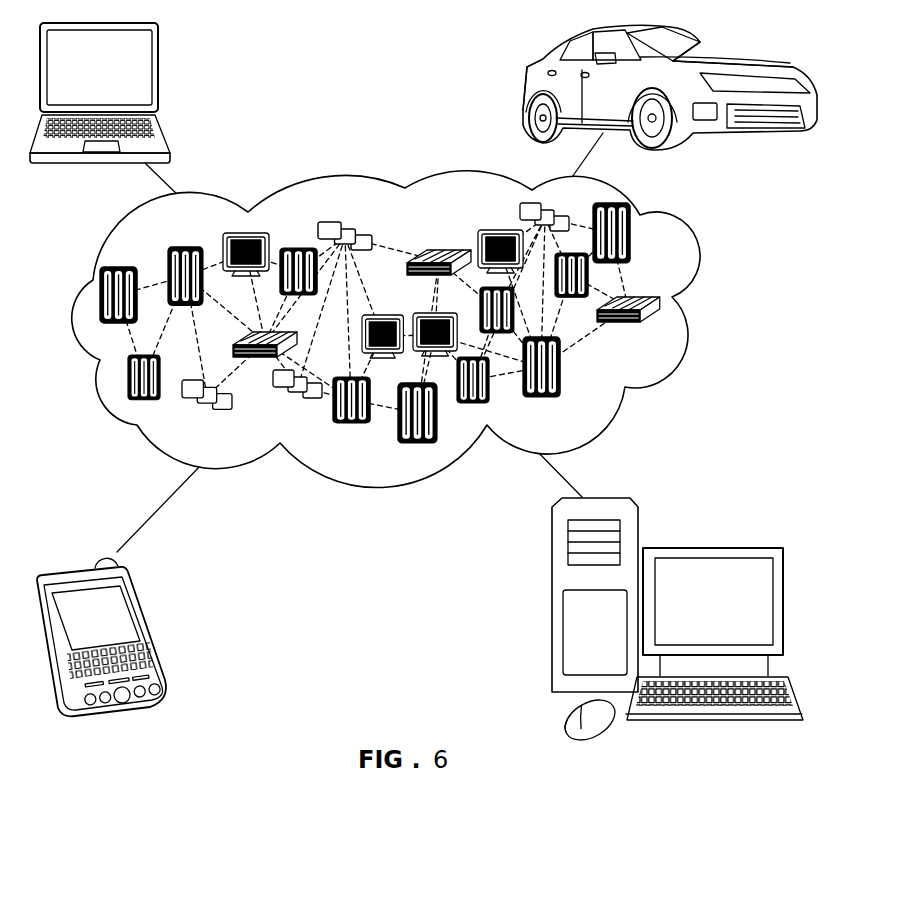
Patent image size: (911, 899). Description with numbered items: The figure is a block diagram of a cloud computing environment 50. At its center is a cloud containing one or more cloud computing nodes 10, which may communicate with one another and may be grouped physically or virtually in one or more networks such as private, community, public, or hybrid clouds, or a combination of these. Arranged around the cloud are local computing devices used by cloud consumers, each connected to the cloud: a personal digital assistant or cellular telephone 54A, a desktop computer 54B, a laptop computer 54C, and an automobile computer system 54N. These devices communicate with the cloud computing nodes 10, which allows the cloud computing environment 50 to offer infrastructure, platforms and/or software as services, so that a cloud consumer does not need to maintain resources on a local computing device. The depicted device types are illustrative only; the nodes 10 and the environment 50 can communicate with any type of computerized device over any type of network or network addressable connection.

The cloud computing environment 50 is at (718, 303).
The cloud computing nodes 10 is at (668, 331).
The personal digital assistant (PDA) or cellular telephone 54A is at (150, 626).
The desktop computer 54B is at (717, 547).
The laptop computer 54C is at (158, 76).
The automobile computer system 54N is at (527, 88).